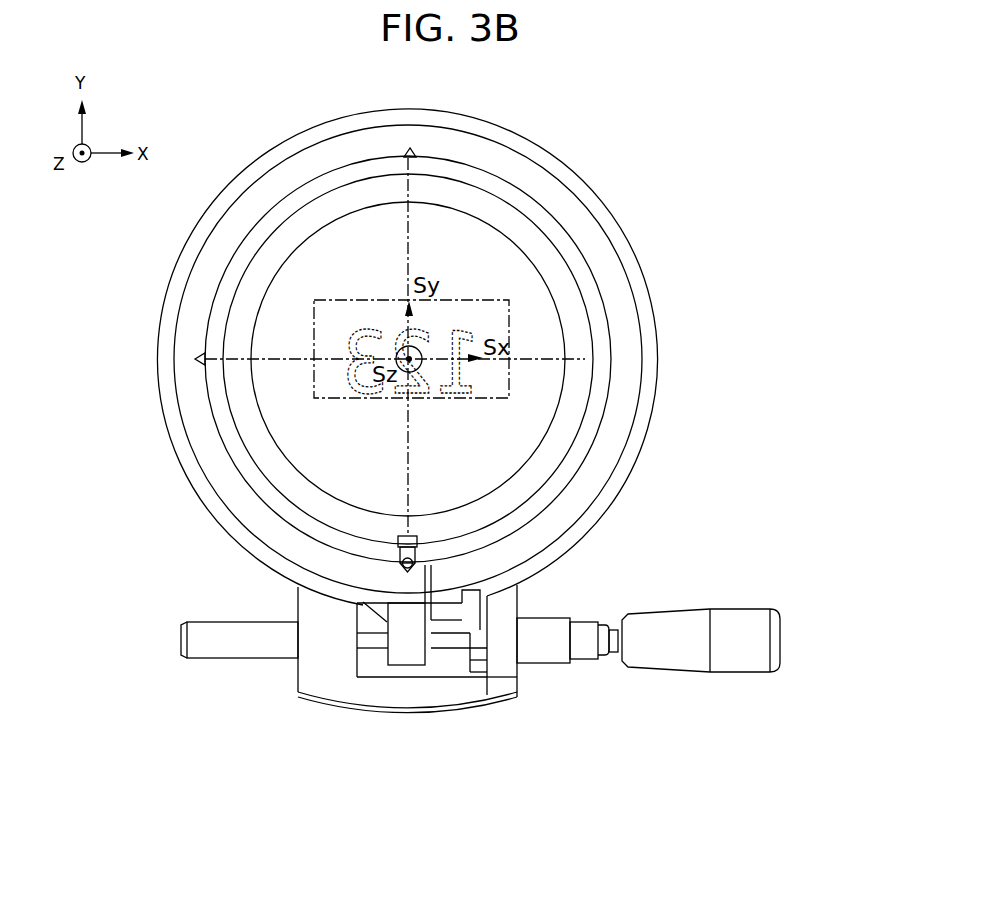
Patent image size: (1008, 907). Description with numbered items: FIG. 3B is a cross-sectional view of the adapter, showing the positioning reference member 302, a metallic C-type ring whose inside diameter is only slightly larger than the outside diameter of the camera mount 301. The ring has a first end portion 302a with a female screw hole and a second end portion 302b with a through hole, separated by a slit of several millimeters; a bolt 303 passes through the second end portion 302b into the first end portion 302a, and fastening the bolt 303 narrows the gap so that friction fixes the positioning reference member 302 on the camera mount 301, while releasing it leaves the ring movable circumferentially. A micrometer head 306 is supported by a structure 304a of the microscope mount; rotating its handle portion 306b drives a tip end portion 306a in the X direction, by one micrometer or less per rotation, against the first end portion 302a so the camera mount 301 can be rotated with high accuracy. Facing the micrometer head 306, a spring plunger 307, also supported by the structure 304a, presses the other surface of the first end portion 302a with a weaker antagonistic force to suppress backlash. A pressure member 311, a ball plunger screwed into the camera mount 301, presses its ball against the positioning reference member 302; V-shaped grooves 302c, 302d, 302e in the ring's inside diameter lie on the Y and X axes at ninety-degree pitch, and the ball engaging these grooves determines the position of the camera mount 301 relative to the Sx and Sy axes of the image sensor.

The camera mount 301 is at (578, 347).
The positioning reference member 302 is at (612, 422).
The first end portion 302a is at (402, 650).
The second end portion 302b is at (448, 597).
The groove 302c is at (400, 567).
The groove 302d is at (195, 359).
The groove 302e is at (417, 155).
The bolt 303 is at (472, 622).
The structure 304a is at (478, 687).
The micrometer head 306 is at (562, 647).
The tip end portion 306a is at (447, 650).
The handle portion 306b is at (730, 637).
The spring plunger 307 is at (220, 638).
The pressure member 311 is at (405, 534).